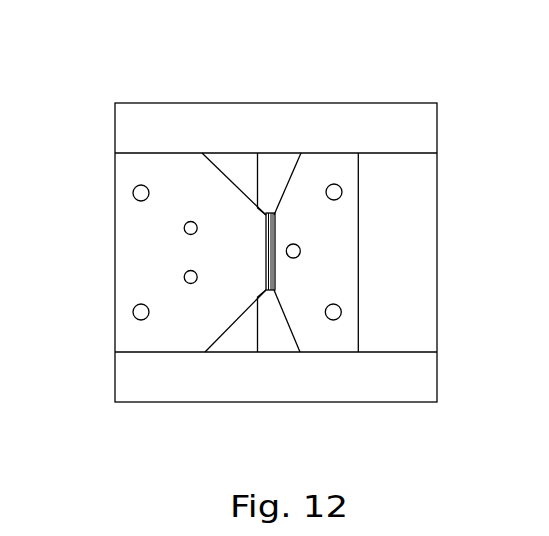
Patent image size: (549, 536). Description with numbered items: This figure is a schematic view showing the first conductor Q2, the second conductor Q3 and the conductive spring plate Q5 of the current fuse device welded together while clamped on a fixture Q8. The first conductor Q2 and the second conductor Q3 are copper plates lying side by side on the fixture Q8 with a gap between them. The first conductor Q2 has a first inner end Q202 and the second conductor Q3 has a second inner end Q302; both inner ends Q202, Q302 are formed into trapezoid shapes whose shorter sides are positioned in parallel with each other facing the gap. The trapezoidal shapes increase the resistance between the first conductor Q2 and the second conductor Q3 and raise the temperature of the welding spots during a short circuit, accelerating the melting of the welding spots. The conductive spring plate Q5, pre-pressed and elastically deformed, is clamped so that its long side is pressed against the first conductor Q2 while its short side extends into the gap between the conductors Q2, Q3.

The fixture Q8 is at (277, 118).
The first conductor Q2 is at (145, 245).
The first inner end Q202 is at (242, 240).
The second conductor Q3 is at (338, 263).
The second inner end Q302 is at (305, 208).
The conductive spring plate Q5 is at (266, 257).